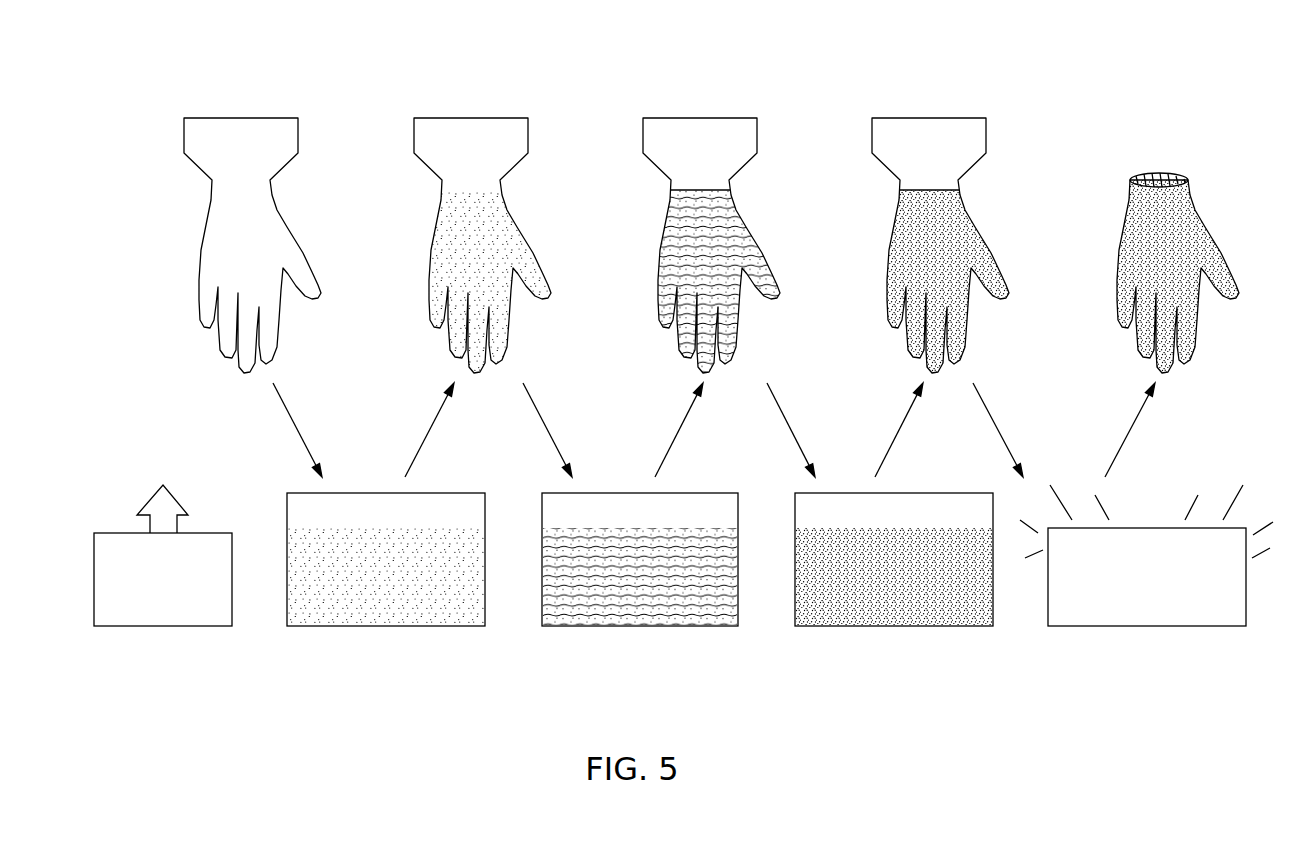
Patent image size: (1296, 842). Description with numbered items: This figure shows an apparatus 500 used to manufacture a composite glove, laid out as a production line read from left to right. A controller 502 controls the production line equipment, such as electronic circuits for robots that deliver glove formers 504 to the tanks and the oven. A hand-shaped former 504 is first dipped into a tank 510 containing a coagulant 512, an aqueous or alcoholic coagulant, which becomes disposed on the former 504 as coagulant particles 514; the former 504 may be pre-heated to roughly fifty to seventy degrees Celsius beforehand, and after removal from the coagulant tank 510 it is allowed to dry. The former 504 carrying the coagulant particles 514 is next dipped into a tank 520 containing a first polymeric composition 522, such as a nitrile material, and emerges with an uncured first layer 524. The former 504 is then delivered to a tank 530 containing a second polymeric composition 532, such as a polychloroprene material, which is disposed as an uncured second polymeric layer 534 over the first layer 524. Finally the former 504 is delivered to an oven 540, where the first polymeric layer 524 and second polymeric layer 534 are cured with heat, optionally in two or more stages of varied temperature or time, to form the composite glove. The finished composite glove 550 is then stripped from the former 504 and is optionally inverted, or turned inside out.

The apparatus 500 is at (1153, 80).
The controller 502 is at (163, 626).
The former 504 is at (287, 133).
The tank 510 is at (386, 592).
The coagulant 512 is at (333, 615).
The coagulant particles 514 is at (500, 225).
The tank 520 is at (640, 592).
The first polymeric composition 522 is at (587, 615).
The first layer 524 is at (729, 225).
The tank 530 is at (894, 592).
The second polymeric composition 532 is at (840, 615).
The second polymeric layer 534 is at (958, 225).
The oven 540 is at (1146, 626).
The composite glove 550 is at (1168, 158).